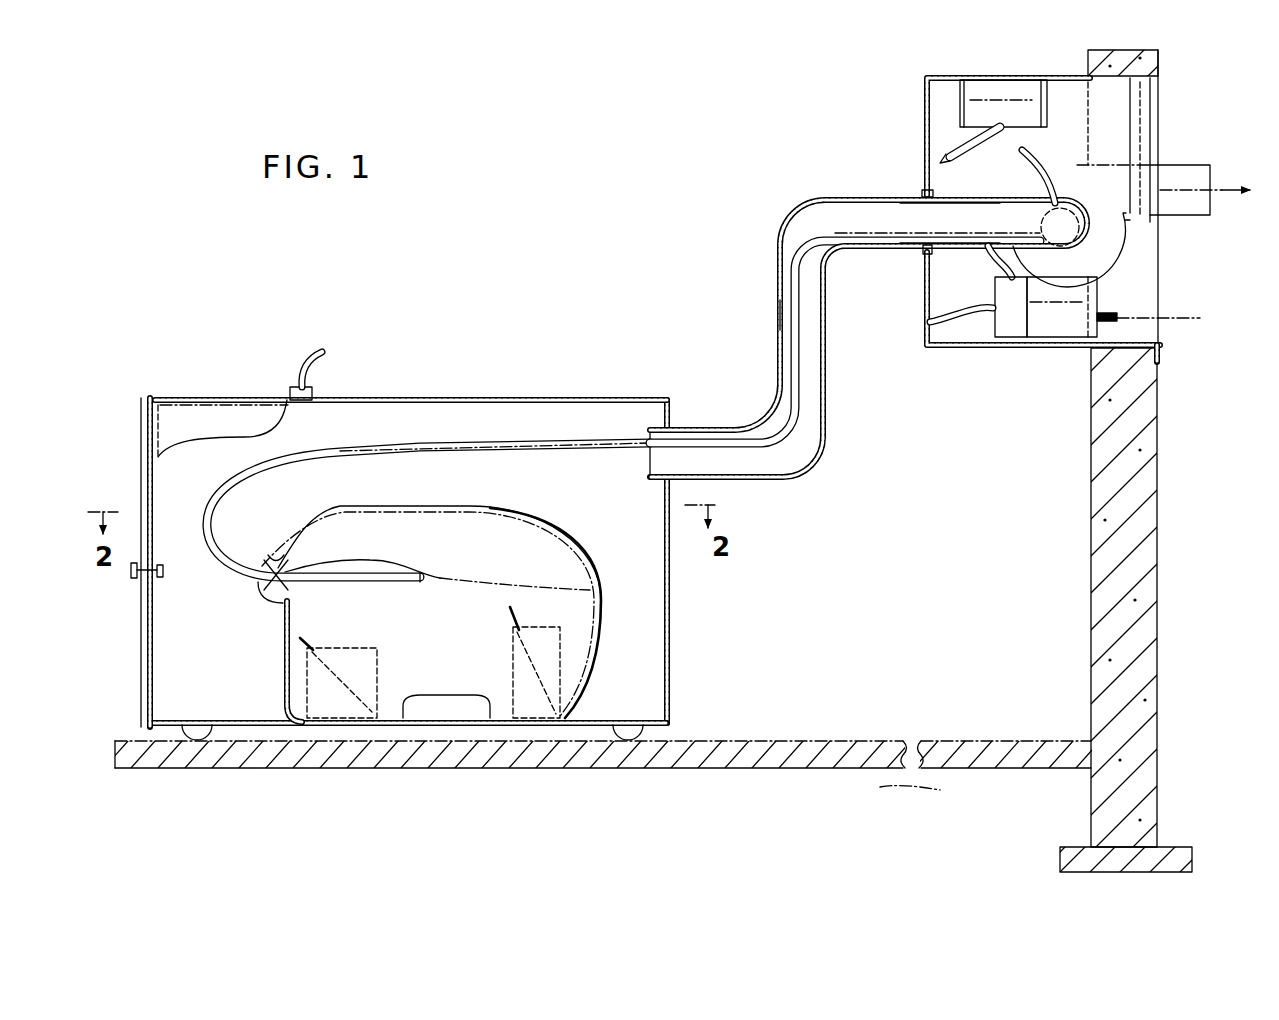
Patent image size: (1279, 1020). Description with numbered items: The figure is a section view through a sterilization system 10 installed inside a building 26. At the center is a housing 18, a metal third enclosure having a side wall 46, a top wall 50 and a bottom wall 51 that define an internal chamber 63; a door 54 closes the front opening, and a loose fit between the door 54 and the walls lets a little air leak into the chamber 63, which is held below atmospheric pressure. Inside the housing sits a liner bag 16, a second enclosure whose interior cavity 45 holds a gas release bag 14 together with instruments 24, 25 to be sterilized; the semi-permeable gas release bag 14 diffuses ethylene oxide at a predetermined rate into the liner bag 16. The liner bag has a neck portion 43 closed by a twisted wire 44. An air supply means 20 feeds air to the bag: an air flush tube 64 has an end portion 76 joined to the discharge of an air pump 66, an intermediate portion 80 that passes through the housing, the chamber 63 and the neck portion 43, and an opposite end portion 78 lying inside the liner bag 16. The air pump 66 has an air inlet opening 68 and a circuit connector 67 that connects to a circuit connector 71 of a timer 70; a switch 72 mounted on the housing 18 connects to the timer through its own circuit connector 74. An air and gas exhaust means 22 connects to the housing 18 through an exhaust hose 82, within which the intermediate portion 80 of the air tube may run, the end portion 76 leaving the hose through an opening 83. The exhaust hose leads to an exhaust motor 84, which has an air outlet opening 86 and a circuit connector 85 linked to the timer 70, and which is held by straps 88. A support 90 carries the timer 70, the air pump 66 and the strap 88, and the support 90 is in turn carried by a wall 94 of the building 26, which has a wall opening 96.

The sterilization system 10 is at (298, 306).
The gas release bag 14 is at (440, 712).
The liner bag 16 is at (608, 603).
The housing 18 is at (601, 396).
The air supply means 20 is at (1013, 344).
The air and gas exhaust means 22 is at (1030, 180).
The instrument 24 is at (315, 641).
The instrument 25 is at (521, 619).
The building 26 is at (1197, 600).
The neck portion 43 is at (256, 588).
The twisted wire 44 is at (273, 572).
The interior cavity 45 is at (500, 561).
The side wall 46 is at (198, 410).
The top wall 50 is at (472, 398).
The bottom wall 51 is at (275, 726).
The door 54 is at (141, 642).
The chamber 63 is at (558, 432).
The air flush tube 64 is at (798, 260).
The air pump 66 is at (1073, 308).
The circuit connector 67 is at (935, 319).
The air inlet opening 68 is at (1113, 316).
The timer 70 is at (1003, 100).
The circuit connector 71 is at (948, 137).
The switch 72 is at (290, 391).
The circuit connector 74 is at (303, 372).
The end portion 76 is at (933, 239).
The opposite end portion 78 is at (374, 577).
The intermediate portion 80 is at (791, 335).
The exhaust hose 82 is at (795, 213).
The opening 83 is at (992, 247).
The exhaust motor 84 is at (950, 189).
The circuit connector 85 is at (1027, 159).
The air outlet opening 86 is at (1228, 161).
The straps 88 is at (1152, 119).
The support 90 is at (924, 173).
The wall 94 is at (1158, 498).
The wall opening 96 is at (1142, 338).